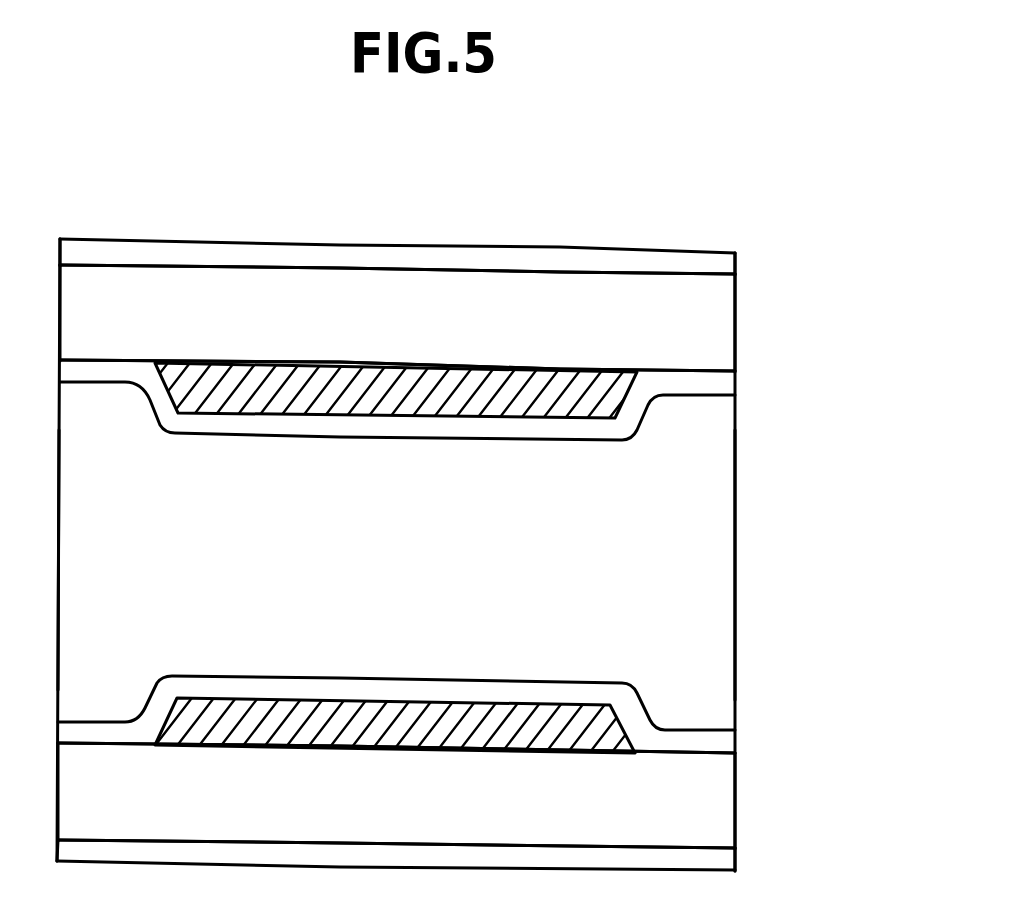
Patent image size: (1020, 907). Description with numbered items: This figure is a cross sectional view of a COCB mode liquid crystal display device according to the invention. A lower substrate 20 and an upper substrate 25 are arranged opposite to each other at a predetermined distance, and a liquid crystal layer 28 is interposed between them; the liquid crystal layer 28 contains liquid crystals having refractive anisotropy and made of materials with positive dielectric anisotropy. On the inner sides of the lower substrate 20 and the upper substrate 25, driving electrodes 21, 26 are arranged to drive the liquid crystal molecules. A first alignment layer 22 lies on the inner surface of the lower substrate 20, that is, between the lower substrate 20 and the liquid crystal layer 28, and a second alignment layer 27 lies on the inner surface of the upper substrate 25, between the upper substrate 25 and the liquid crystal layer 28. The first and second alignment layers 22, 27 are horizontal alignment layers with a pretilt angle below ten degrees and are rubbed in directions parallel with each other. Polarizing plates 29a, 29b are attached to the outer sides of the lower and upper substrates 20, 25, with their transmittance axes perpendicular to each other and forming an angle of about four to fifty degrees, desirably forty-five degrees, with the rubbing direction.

The lower substrate 20 is at (716, 805).
The driving electrode 21 is at (600, 728).
The first alignment layer 22 is at (716, 744).
The upper substrate 25 is at (718, 325).
The driving electrode 26 is at (612, 389).
The second alignment layer 27 is at (718, 381).
The liquid crystal layer 28 is at (716, 571).
The polarizing plate 29a is at (716, 862).
The polarizing plate 29b is at (718, 264).